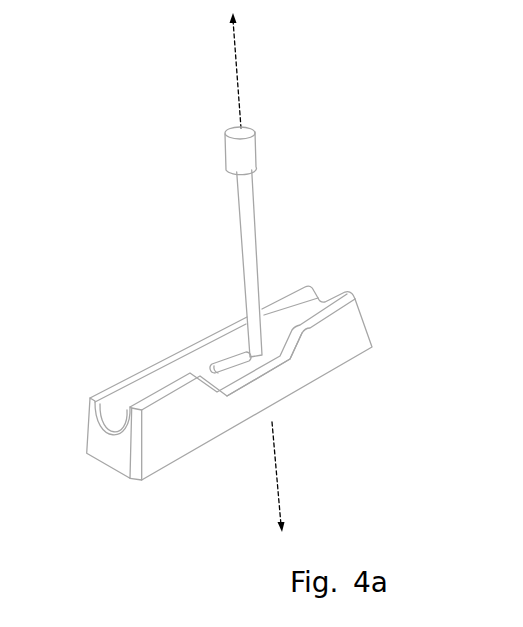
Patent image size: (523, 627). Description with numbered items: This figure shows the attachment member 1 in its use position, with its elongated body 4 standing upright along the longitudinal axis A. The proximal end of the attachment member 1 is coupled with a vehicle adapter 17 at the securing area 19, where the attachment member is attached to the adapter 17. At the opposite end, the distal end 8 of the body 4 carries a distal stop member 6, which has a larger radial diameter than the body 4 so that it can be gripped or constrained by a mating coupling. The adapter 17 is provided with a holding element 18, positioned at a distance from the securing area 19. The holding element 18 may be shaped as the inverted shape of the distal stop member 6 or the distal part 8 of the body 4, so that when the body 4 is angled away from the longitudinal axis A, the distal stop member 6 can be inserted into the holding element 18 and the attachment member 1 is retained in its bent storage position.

The attachment member 1 is at (300, 162).
The body 4 is at (220, 345).
The distal stop member 6 is at (237, 147).
The distal end 8 is at (245, 188).
The vehicle adapter 17 is at (223, 373).
The holding element 18 is at (120, 410).
The securing area 19 is at (257, 340).
The longitudinal axis A is at (235, 50).